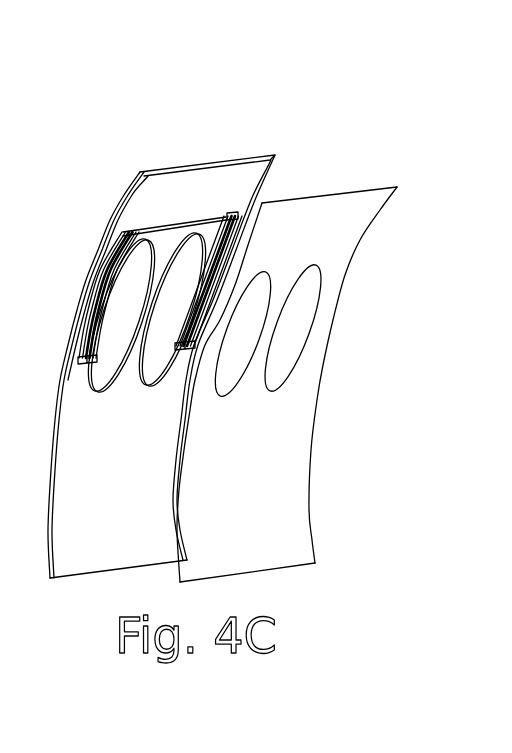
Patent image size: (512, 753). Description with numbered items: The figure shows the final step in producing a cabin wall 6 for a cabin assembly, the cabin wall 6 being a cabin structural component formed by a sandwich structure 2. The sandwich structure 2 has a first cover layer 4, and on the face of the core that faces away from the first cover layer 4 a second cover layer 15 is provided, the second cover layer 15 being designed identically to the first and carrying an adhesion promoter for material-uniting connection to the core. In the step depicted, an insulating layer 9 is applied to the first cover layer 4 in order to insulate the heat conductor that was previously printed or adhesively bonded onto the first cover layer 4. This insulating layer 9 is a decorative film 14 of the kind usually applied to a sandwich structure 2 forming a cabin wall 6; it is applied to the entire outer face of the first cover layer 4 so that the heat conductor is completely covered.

The first cover layer 4 is at (172, 183).
The sandwich structure 2 is at (213, 188).
The second cover layer 15 is at (233, 214).
The insulating layer 9 is at (344, 384).
The decorative film 14 is at (380, 228).
The cabin wall 6 is at (411, 339).